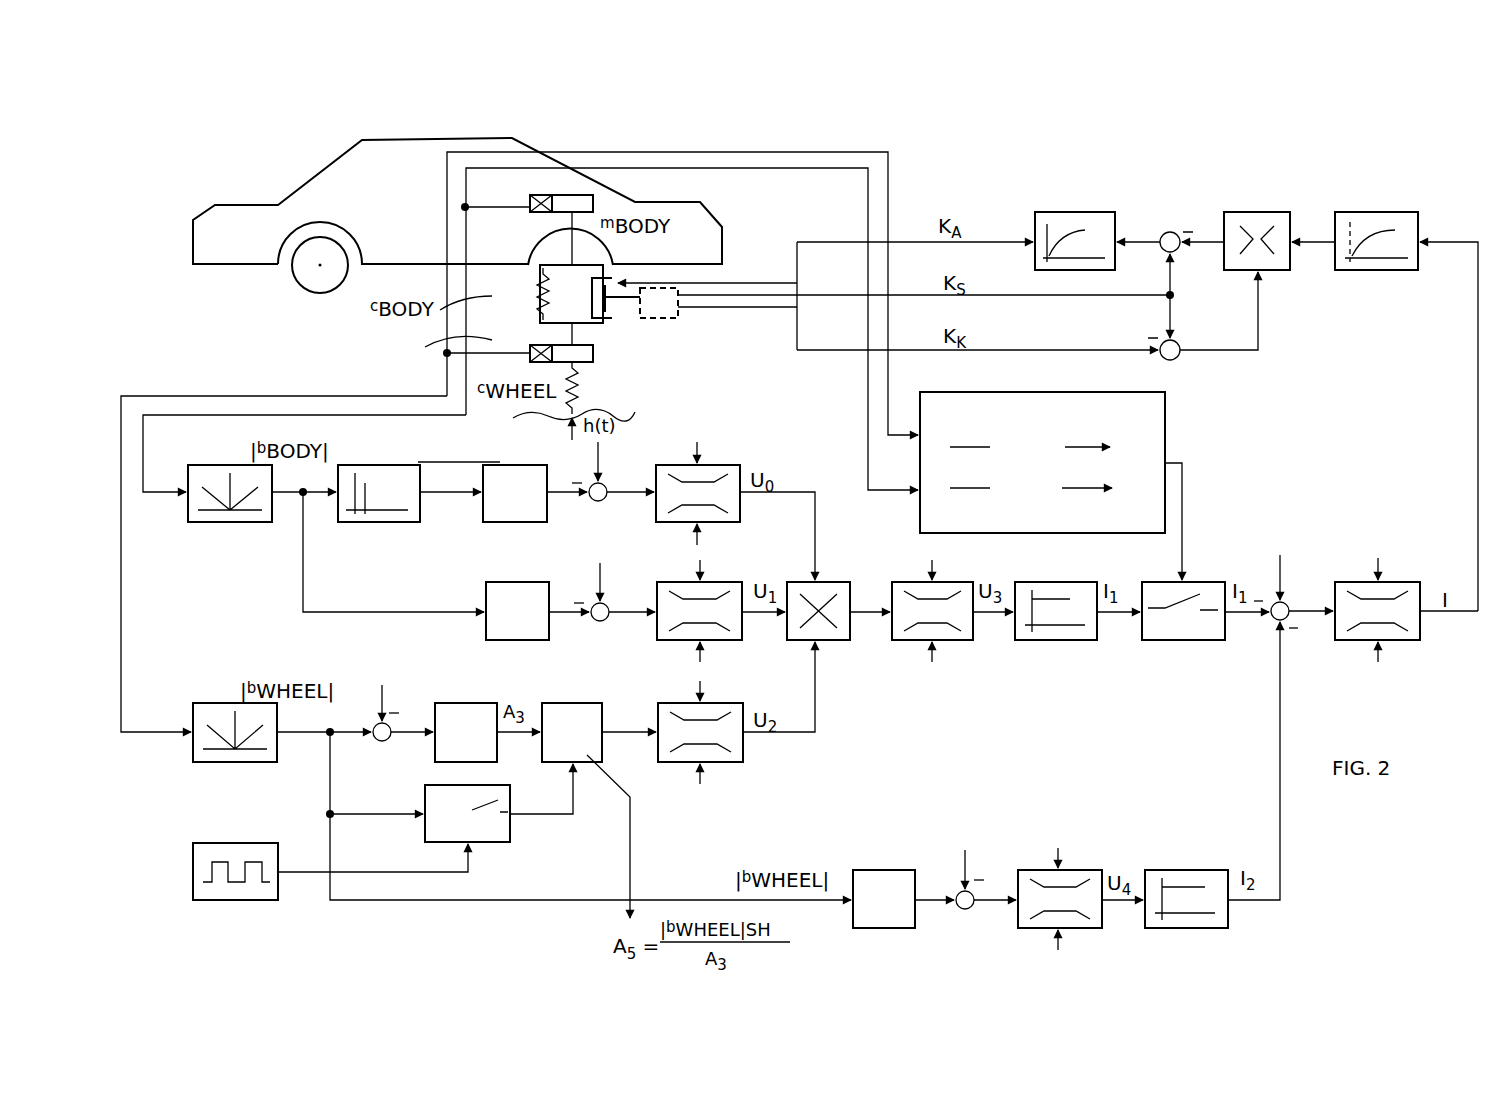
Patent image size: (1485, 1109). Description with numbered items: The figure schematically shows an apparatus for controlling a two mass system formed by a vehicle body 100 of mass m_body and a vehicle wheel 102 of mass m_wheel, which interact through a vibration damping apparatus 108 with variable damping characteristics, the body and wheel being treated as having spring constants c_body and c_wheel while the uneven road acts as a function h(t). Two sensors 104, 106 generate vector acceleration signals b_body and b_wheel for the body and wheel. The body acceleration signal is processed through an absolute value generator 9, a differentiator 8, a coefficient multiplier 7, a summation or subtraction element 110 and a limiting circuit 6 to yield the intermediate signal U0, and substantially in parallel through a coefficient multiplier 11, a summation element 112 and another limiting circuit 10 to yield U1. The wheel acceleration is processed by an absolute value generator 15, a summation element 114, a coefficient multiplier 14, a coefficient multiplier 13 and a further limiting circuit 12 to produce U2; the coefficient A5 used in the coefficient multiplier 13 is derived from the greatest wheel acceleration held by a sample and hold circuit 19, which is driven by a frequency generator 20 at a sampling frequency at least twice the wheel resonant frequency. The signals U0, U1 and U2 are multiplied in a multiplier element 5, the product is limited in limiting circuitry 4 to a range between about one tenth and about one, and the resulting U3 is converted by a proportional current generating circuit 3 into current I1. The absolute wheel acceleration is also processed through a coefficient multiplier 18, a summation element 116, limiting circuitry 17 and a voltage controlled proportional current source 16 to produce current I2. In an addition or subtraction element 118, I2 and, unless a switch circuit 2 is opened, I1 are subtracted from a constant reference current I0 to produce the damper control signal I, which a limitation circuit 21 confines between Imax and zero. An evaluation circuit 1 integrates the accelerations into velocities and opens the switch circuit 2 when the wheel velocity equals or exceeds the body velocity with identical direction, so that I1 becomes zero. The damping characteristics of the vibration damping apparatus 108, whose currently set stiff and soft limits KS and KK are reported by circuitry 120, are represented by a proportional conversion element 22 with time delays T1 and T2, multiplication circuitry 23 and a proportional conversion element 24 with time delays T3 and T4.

The evaluation circuit 1 is at (1051, 470).
The switch circuit 2 is at (1183, 599).
The proportional current generating circuit 3 is at (1056, 599).
The limiting circuitry 4 is at (932, 614).
The multiplier element 5 is at (818, 599).
The limiting circuit 6 is at (697, 496).
The coefficient multiplier 7 is at (515, 480).
The differentiator 8 is at (419, 479).
The absolute value generator 9 is at (230, 480).
The limiting circuit 10 is at (696, 614).
The coefficient multiplier 11 is at (514, 599).
The limiting circuit 12 is at (696, 734).
The coefficient multiplier 13 is at (567, 720).
The coefficient multiplier 14 is at (463, 720).
The absolute value generator 15 is at (231, 720).
The voltage controlled proportional current source 16 is at (1182, 886).
The limiting circuitry 17 is at (1057, 902).
The coefficient multiplier 18 is at (879, 886).
The sample and hold circuit 19 is at (520, 818).
The frequency generator 20 is at (332, 888).
The limitation circuit 21 is at (1376, 610).
The proportional conversion element 22 is at (1385, 398).
The multiplication circuitry 23 is at (1235, 268).
The proportional conversion element 24 is at (1092, 228).
The vehicle body 100 is at (193, 253).
The vehicle wheel 102 is at (291, 276).
The sensor 104 is at (597, 201).
The sensor 106 is at (595, 364).
The vibration damping apparatus 108 is at (612, 275).
The summation element 110 is at (599, 508).
The summation element 112 is at (601, 628).
The summation element 114 is at (385, 741).
The summation element 116 is at (965, 910).
The addition element 118 is at (1276, 600).
The circuitry 120 is at (660, 318).